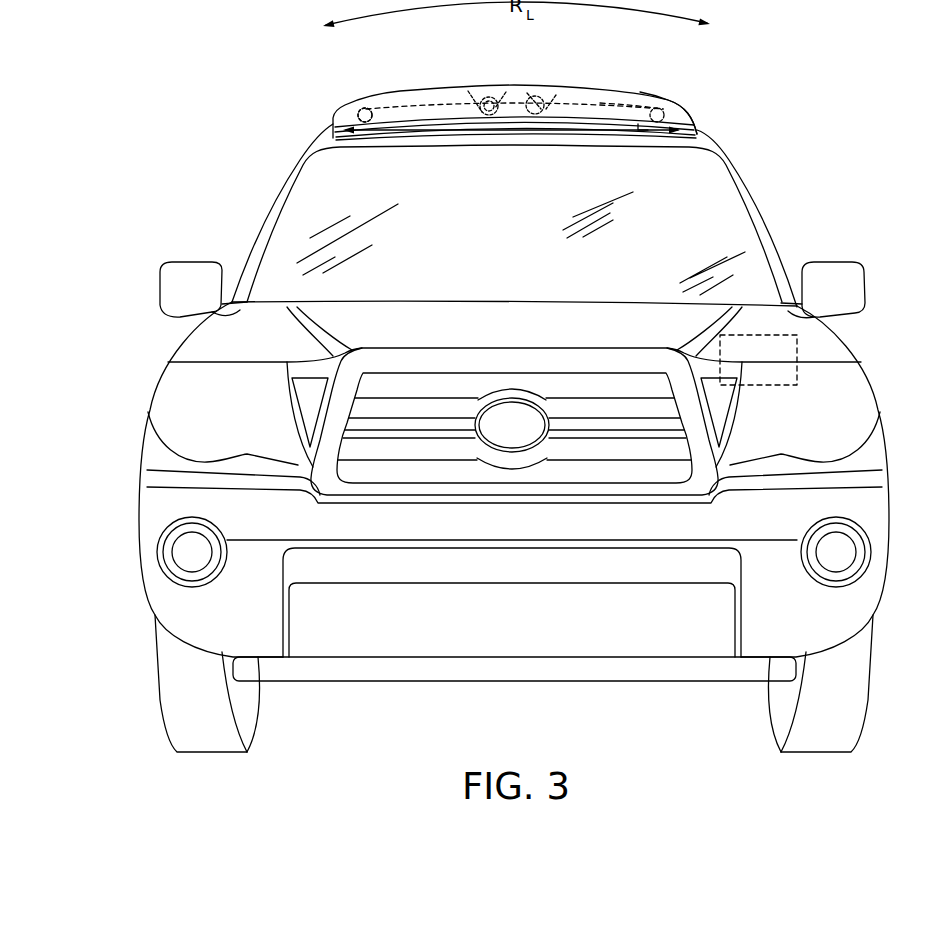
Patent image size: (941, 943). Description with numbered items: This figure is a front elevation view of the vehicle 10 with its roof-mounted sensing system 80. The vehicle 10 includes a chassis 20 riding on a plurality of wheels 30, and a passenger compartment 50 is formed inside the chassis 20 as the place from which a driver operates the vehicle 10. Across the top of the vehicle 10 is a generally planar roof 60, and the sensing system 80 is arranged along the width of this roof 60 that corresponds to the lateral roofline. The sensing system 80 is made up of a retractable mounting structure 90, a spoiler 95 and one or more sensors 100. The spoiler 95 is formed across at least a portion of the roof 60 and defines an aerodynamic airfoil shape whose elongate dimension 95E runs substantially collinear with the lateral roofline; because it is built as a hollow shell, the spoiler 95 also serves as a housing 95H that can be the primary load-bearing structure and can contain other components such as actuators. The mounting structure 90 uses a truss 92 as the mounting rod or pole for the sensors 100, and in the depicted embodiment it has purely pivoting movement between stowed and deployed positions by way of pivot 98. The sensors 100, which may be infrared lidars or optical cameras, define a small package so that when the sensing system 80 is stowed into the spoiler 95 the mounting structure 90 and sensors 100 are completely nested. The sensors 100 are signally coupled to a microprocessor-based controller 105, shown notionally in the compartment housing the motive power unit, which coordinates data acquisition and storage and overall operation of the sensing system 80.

The vehicle 10 is at (101, 129).
The chassis 20 is at (148, 451).
The wheels 30 is at (857, 697).
The passenger compartment 50 is at (538, 263).
The roof 60 is at (709, 135).
The sensing system 80 is at (468, 83).
The mounting structure 90 is at (686, 93).
The truss 92 is at (418, 100).
The spoiler 95 is at (337, 135).
The elongate dimension 95E is at (511, 127).
The housing 95H is at (633, 104).
The pivot 98 is at (363, 112).
The sensors 100 is at (492, 102).
The controller 105 is at (797, 355).